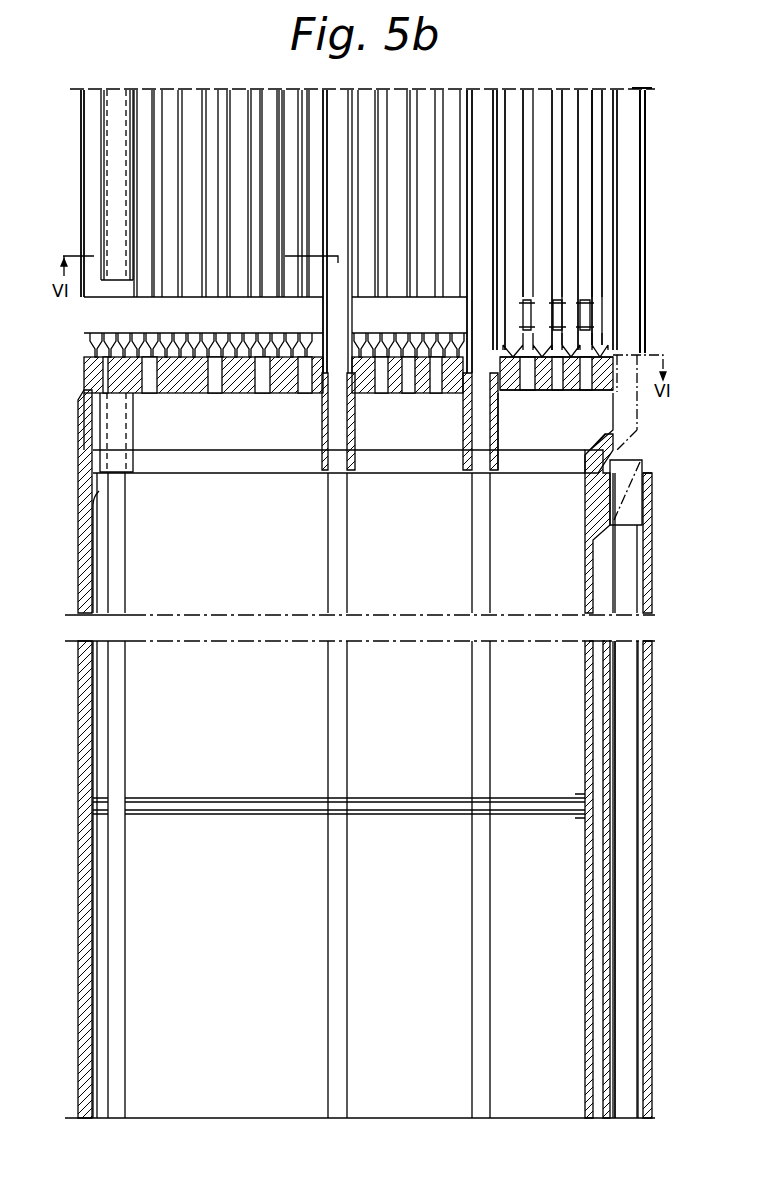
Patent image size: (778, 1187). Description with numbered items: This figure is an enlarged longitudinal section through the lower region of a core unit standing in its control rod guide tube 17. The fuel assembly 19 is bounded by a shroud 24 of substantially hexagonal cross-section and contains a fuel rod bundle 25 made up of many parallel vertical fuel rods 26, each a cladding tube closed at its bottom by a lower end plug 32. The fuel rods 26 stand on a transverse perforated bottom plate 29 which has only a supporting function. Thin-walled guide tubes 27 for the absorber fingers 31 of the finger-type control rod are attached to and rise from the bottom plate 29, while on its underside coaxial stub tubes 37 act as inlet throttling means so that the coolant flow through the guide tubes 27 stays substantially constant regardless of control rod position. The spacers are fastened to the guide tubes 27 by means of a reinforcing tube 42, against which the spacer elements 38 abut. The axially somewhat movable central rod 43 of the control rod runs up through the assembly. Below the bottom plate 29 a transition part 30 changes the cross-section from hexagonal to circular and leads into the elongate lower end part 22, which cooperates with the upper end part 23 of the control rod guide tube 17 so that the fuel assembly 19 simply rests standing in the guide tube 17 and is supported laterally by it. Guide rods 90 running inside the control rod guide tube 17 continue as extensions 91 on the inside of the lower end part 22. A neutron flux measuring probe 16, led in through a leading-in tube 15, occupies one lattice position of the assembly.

The leading-in tube 15 is at (646, 741).
The neutron flux measuring probe 16 is at (632, 142).
The control rod guide tube 17 is at (590, 1003).
The fuel assembly 19 is at (556, 150).
The elongate lower end part 22 is at (589, 716).
The upper end part 23 is at (592, 683).
The shroud 24 is at (641, 160).
The fuel rod bundle 25 is at (587, 223).
The fuel rod 26 is at (602, 280).
The guide tube 27 is at (497, 113).
The perforated bottom plate 29 is at (546, 388).
The transition part 30 is at (615, 443).
The absorber finger 31 is at (486, 582).
The lower end plug 32 is at (587, 380).
The stub tube 37 is at (500, 435).
The spacer element 38 is at (587, 312).
The reinforcing tube 42 is at (513, 278).
The central rod 43 is at (341, 582).
The guide rod 90 is at (92, 903).
The extension 91 is at (92, 578).